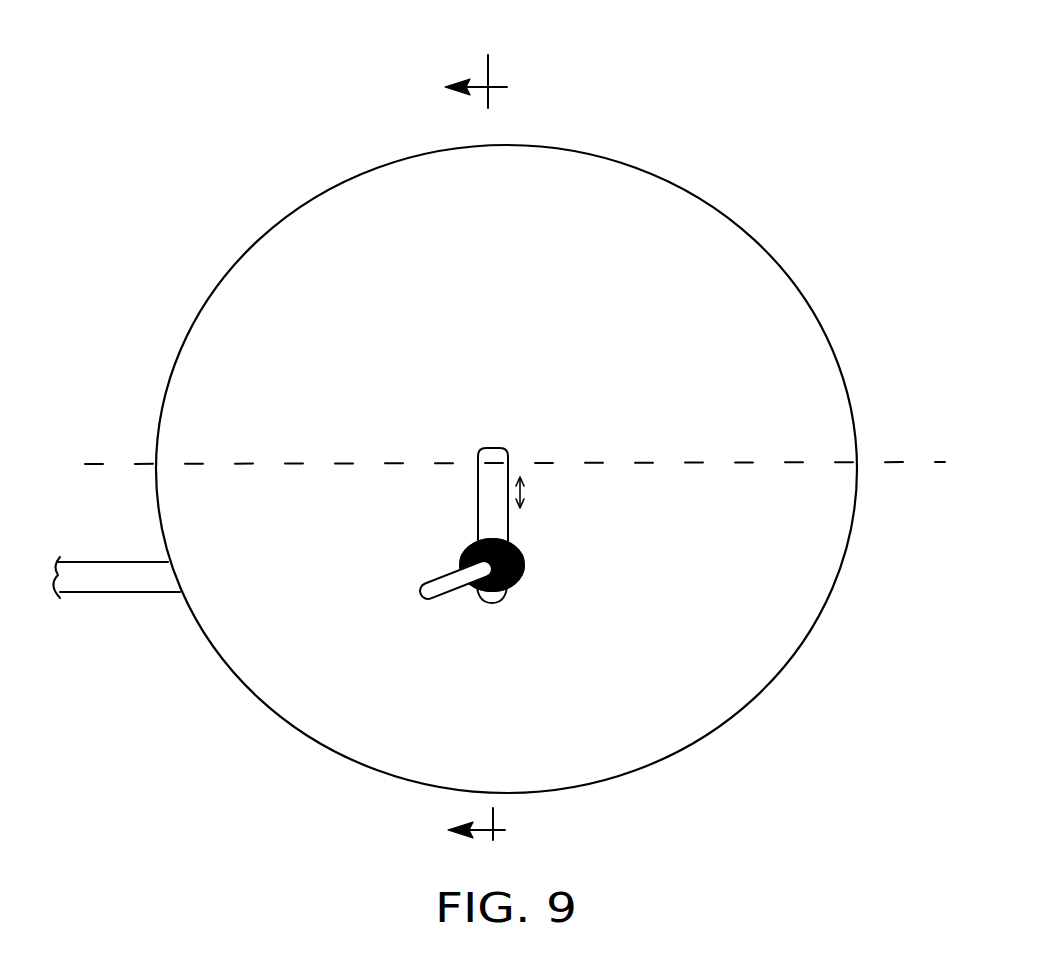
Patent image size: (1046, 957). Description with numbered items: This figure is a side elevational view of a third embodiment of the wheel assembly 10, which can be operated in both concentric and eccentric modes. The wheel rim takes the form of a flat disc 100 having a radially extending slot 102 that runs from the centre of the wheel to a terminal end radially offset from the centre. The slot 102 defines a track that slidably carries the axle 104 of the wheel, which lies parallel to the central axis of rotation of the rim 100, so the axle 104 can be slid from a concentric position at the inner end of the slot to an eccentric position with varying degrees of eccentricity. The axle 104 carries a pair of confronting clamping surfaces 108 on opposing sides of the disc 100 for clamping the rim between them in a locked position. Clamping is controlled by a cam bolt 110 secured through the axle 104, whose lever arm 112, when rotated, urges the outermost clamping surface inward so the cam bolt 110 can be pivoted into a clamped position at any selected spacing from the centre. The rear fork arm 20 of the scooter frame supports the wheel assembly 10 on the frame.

The wheel assembly 10 is at (481, 451).
The rear fork arm 20 is at (108, 588).
The flat disc 100 is at (650, 200).
The radially extending slot 102 is at (487, 479).
The axle 104 is at (524, 556).
The confronting clamping surfaces 108 is at (516, 583).
The cam bolt 110 is at (462, 560).
The lever arm 112 is at (440, 592).